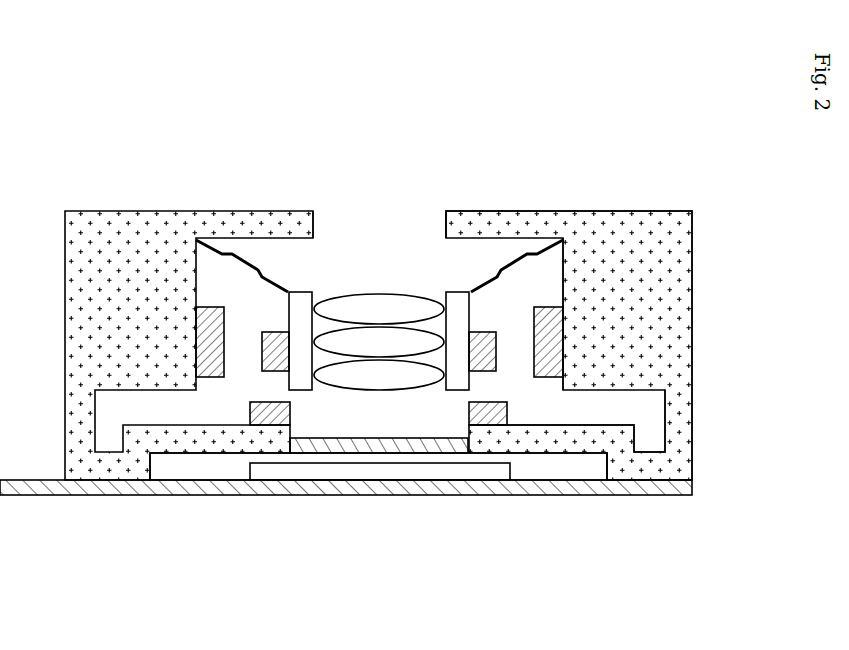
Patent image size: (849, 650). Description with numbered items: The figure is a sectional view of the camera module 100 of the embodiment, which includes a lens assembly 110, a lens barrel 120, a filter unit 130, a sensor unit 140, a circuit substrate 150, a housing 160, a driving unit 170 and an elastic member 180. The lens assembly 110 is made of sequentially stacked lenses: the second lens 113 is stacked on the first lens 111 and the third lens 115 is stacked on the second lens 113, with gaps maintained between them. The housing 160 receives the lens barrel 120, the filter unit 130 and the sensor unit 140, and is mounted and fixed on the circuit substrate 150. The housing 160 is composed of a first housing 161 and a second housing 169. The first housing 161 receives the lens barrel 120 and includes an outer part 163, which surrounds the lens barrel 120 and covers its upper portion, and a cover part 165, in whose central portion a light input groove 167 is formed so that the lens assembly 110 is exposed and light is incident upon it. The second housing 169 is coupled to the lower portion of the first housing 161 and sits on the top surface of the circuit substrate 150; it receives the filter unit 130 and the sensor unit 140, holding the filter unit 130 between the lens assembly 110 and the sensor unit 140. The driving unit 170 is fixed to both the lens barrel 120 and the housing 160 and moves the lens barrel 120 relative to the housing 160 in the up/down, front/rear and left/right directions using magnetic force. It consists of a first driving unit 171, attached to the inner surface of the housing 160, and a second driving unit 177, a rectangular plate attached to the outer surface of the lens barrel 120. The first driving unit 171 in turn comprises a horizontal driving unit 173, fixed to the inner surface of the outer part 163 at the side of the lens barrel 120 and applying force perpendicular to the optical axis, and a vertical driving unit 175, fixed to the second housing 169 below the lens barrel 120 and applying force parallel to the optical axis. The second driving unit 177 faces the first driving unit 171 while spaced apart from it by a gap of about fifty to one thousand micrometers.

The camera module 100 is at (700, 74).
The lens assembly 110 is at (379, 307).
The first lens 111 is at (342, 372).
The second lens 113 is at (383, 342).
The third lens 115 is at (424, 305).
The lens barrel 120 is at (305, 390).
The filter unit 130 is at (418, 446).
The sensor unit 140 is at (366, 470).
The circuit substrate 150 is at (653, 490).
The housing 160 is at (106, 228).
The first housing 161 is at (618, 340).
The outer part 163 is at (692, 332).
The cover part 165 is at (692, 228).
The light input groove 167 is at (440, 220).
The second housing 169 is at (682, 452).
The driving unit 170 is at (363, 456).
The first driving unit 171 is at (363, 439).
The horizontal driving unit 173 is at (208, 377).
The vertical driving unit 175 is at (250, 412).
The second driving unit 177 is at (277, 365).
The elastic member 180 is at (504, 245).